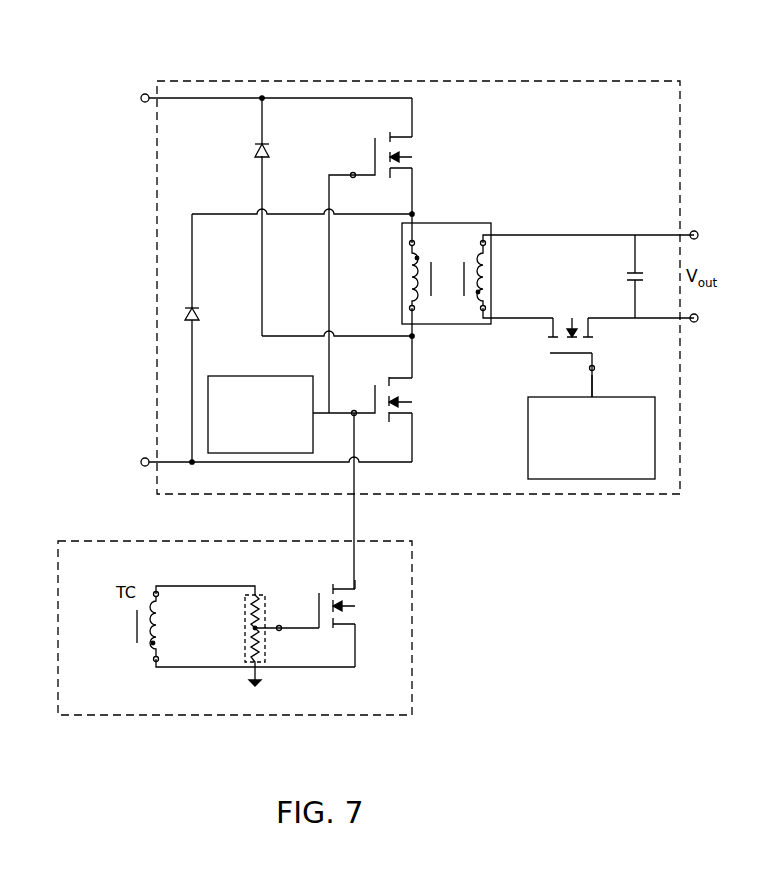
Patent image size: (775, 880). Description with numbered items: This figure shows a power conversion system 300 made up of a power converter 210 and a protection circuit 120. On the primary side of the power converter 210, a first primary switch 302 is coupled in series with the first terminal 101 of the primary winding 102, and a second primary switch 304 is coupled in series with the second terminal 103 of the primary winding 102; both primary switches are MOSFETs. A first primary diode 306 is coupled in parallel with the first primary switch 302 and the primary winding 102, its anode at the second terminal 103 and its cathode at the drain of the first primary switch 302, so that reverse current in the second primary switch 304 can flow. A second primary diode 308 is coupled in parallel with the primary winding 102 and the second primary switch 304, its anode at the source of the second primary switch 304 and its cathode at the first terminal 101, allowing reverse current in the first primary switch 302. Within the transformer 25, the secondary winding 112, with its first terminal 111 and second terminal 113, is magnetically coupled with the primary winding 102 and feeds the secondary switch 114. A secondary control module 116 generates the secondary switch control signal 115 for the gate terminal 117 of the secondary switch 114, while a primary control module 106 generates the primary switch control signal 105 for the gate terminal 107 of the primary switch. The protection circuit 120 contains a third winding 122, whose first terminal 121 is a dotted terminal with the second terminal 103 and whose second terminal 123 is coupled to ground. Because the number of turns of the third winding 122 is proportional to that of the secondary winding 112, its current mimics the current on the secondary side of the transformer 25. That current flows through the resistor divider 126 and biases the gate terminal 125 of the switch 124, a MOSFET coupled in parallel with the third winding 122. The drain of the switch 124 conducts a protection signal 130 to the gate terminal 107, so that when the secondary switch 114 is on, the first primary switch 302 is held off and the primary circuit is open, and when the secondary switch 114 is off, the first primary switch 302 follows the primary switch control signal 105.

The power conversion system 300 is at (138, 64).
The power converter 210 is at (520, 81).
The first primary diode 306 is at (258, 152).
The first primary switch 302 is at (413, 165).
The second primary switch 304 is at (413, 408).
The second primary diode 308 is at (196, 322).
The transformer 25 is at (445, 274).
The first terminal of the primary winding 101 is at (410, 245).
The second terminal of the primary winding 103 is at (410, 308).
The primary winding 102 is at (416, 304).
The secondary winding 112 is at (482, 304).
The first terminal of the secondary winding 111 is at (486, 246).
The second terminal of the secondary winding 113 is at (486, 307).
The secondary switch 114 is at (590, 326).
The gate terminal of the secondary switch 117 is at (595, 369).
The secondary switch control signal 115 is at (592, 386).
The secondary control module 116 is at (528, 452).
The primary control module 106 is at (264, 376).
The primary switch control signal 105 is at (318, 415).
The gate terminal 107 is at (356, 416).
The protection signal 130 is at (355, 530).
The protection circuit 120 is at (412, 628).
The first terminal of the third winding 121 is at (159, 596).
The second terminal of the third winding 123 is at (159, 657).
The third winding 122 is at (145, 644).
The resistor divider 126 is at (262, 602).
The gate terminal of the switch 125 is at (280, 631).
The switch 124 is at (356, 620).